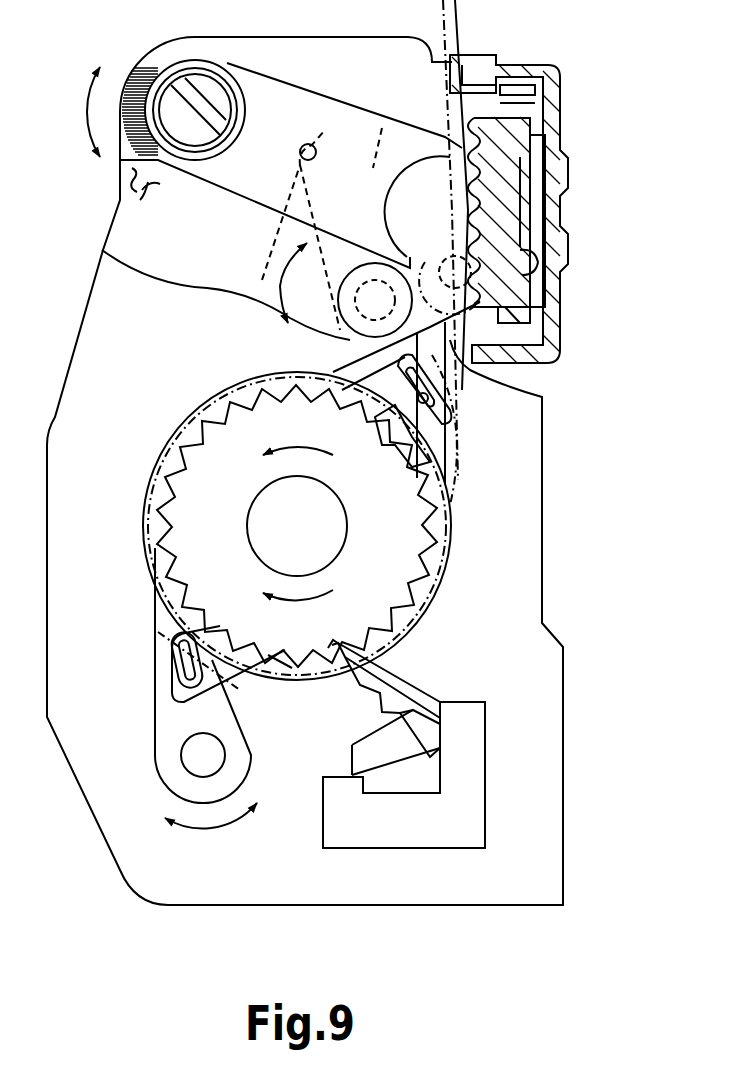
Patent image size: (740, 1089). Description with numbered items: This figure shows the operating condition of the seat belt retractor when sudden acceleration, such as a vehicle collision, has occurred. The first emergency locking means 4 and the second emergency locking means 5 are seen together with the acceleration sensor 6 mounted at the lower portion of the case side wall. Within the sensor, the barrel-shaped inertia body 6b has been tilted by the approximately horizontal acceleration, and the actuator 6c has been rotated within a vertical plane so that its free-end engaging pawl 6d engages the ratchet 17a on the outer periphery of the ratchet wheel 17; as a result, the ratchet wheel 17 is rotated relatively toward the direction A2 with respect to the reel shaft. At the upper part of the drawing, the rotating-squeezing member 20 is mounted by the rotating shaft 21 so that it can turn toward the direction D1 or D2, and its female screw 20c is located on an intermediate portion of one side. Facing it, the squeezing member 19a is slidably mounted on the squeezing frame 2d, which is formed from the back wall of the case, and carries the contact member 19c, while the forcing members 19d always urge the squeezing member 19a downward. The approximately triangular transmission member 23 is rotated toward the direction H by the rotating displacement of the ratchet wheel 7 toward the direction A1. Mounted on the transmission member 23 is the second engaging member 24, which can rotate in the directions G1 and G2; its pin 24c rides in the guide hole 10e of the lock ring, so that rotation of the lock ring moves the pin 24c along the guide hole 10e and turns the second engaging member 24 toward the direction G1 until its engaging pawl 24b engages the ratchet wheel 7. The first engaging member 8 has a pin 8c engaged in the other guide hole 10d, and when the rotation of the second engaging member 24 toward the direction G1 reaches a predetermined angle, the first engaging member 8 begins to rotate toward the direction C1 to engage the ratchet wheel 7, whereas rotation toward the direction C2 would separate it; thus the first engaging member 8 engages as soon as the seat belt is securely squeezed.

The squeezing frame 2d is at (561, 95).
The first emergency locking means 4 is at (136, 468).
The second emergency locking means 5 is at (242, 237).
The acceleration sensor 6 is at (486, 830).
The inertia body 6b is at (353, 767).
The actuator 6c is at (412, 680).
The engaging pawl 6d is at (338, 656).
The ratchet wheel 7 is at (443, 503).
The first engaging member 8 is at (158, 755).
The pin 8c is at (172, 647).
The guide hole 10d is at (170, 679).
The guide hole 10e is at (374, 428).
The ratchet wheel 17 is at (172, 590).
The ratchet 17a is at (287, 655).
The squeezing member 19a is at (530, 210).
The contact member 19c is at (540, 262).
The forcing member 19d is at (519, 84).
The rotating-squeezing member 20 is at (275, 66).
The female screw 20c is at (318, 104).
The rotating shaft 21 is at (190, 78).
The transmission member 23 is at (382, 126).
The second engaging member 24 is at (360, 340).
The engaging pawl 24b is at (447, 462).
The pin 24c is at (446, 410).
The direction A1 is at (291, 441).
The direction A2 is at (286, 610).
The direction C1 is at (170, 834).
The direction C2 is at (252, 825).
The direction D1 is at (87, 151).
The direction D2 is at (92, 76).
The direction G1 is at (282, 259).
The direction G2 is at (266, 314).
The direction H is at (440, 220).